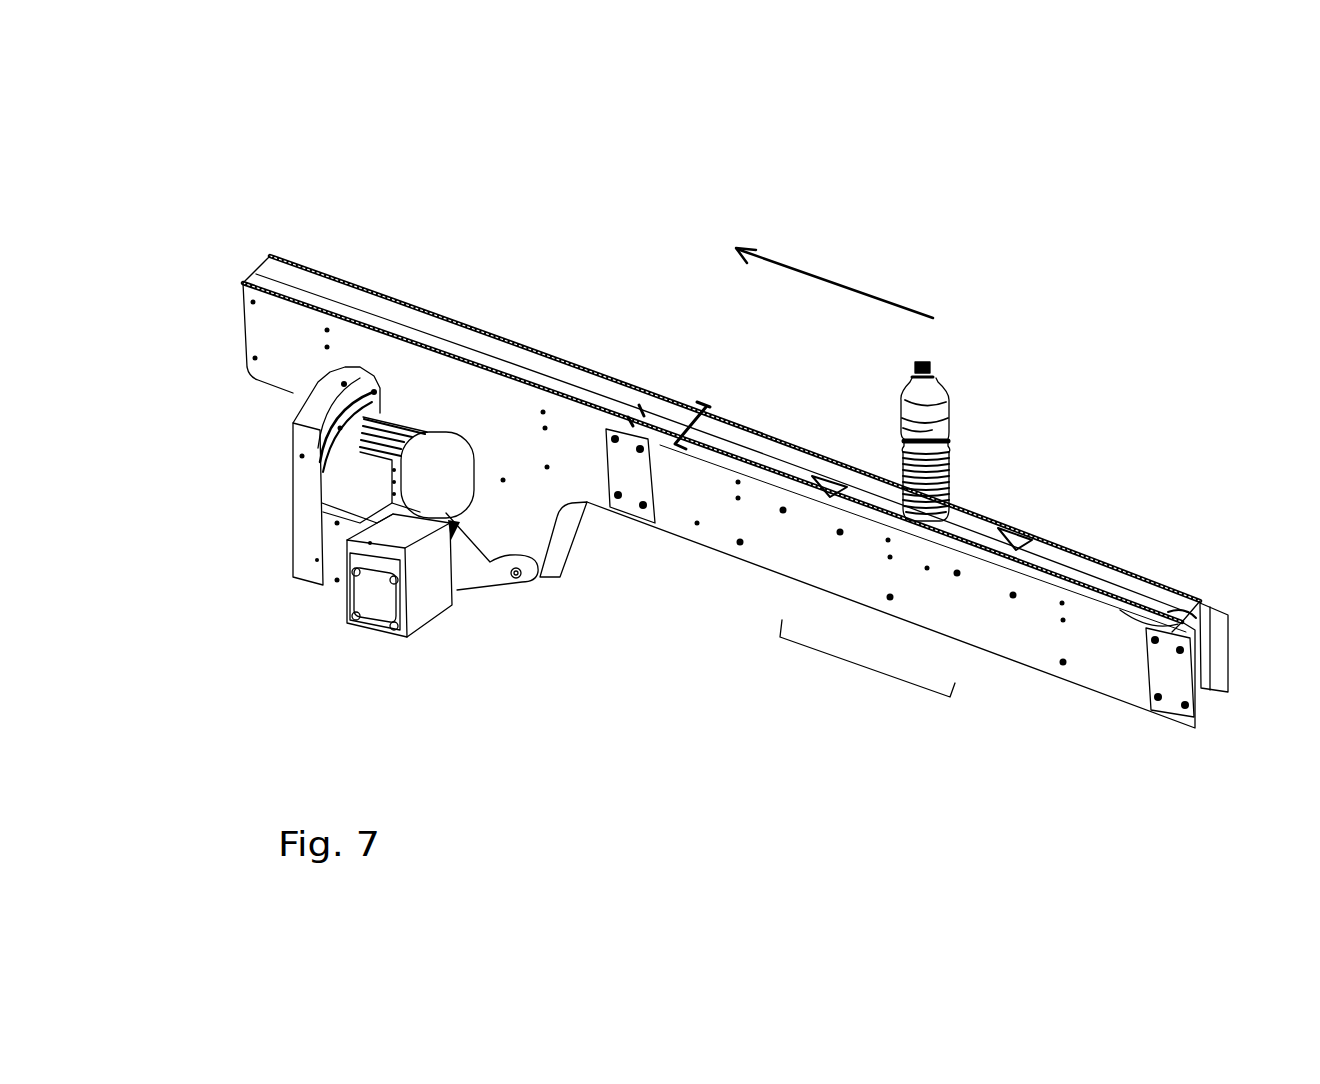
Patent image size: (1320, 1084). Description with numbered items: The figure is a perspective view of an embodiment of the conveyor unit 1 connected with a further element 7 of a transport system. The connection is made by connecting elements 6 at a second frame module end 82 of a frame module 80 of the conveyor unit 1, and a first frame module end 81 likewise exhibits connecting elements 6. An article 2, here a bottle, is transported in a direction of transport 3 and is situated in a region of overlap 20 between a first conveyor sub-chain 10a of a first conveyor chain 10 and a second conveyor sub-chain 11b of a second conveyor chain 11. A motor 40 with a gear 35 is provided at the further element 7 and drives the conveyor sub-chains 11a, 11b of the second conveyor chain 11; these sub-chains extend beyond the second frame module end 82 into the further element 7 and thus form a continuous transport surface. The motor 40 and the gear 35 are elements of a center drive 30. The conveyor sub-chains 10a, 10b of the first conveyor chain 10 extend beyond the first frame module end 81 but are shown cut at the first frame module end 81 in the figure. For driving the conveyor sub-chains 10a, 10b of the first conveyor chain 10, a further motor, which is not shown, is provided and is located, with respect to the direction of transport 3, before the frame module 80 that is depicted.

The conveyor unit 1 is at (710, 540).
The article 2 is at (945, 397).
The direction of transport 3 is at (838, 284).
The connecting elements 6 is at (628, 487).
The further element 7 is at (288, 345).
The first conveyor chain 10 is at (760, 515).
The first conveyor sub-chain 10a is at (1117, 607).
The conveyor sub-chain 10b is at (1152, 591).
The second conveyor chain 11 is at (724, 494).
The conveyor sub-chain 11a is at (705, 437).
The second conveyor sub-chain 11b is at (737, 437).
The region of overlap 20 is at (862, 667).
The center drive 30 is at (374, 562).
The gear 35 is at (323, 592).
The motor 40 is at (360, 445).
The frame module 80 is at (1021, 651).
The first frame module end 81 is at (1187, 597).
The second frame module end 82 is at (640, 410).